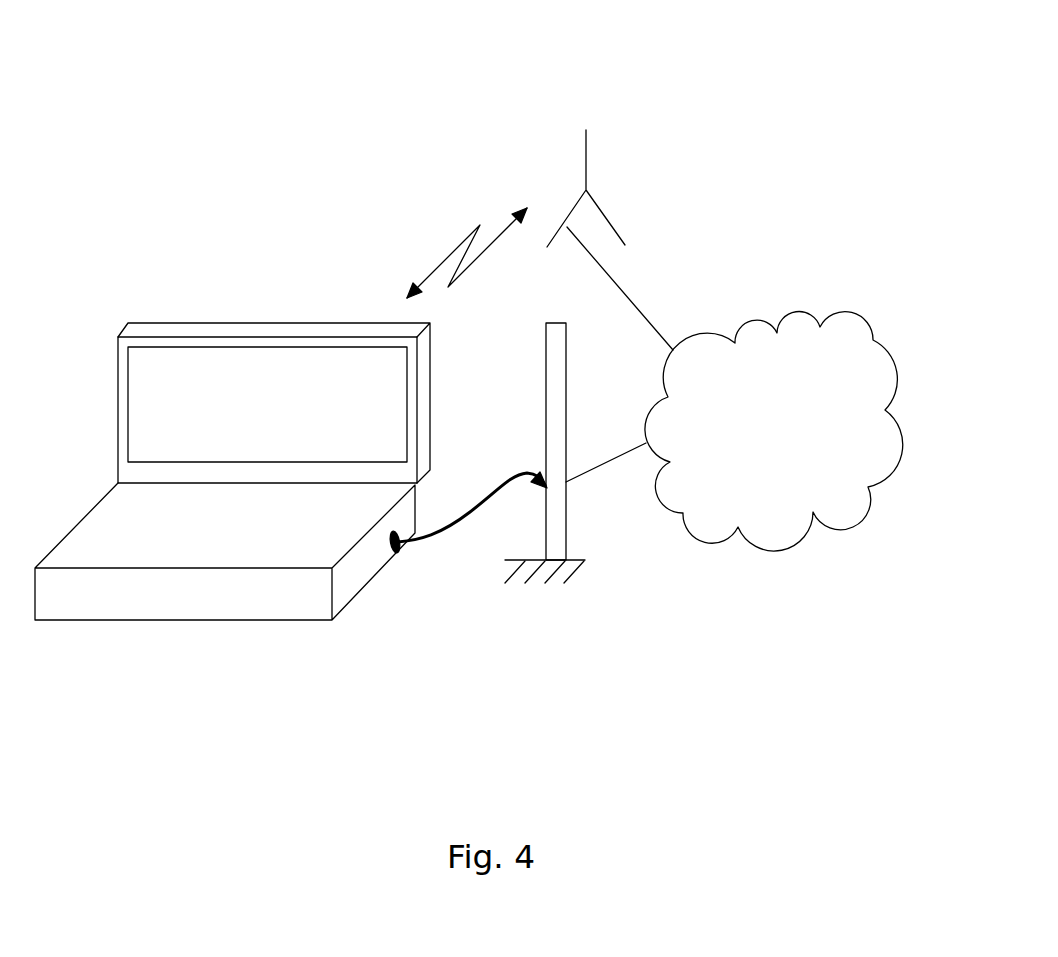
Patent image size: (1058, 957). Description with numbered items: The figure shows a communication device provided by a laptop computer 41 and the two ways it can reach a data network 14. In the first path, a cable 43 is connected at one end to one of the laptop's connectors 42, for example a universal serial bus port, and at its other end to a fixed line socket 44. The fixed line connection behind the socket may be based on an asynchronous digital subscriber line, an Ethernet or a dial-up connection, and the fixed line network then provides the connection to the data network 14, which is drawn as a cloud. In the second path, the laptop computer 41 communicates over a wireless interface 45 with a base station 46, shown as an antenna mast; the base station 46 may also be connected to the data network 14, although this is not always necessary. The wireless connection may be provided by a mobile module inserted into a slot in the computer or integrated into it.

The data network 14 is at (708, 520).
The laptop computer 41 is at (265, 597).
The connector 42 is at (399, 547).
The cable 43 is at (448, 515).
The fixed line socket 44 is at (568, 512).
The wireless interface 45 is at (527, 208).
The base station 46 is at (586, 190).